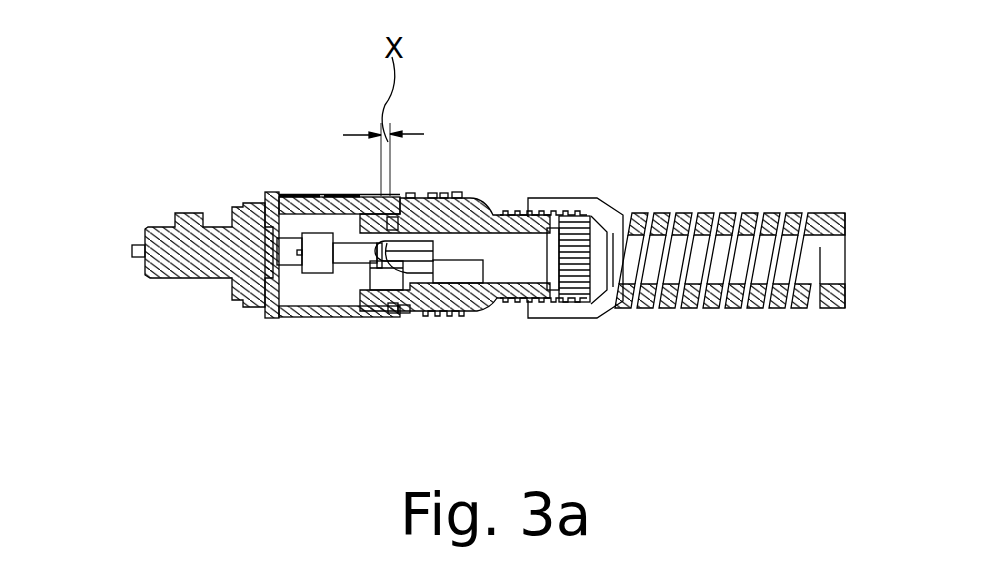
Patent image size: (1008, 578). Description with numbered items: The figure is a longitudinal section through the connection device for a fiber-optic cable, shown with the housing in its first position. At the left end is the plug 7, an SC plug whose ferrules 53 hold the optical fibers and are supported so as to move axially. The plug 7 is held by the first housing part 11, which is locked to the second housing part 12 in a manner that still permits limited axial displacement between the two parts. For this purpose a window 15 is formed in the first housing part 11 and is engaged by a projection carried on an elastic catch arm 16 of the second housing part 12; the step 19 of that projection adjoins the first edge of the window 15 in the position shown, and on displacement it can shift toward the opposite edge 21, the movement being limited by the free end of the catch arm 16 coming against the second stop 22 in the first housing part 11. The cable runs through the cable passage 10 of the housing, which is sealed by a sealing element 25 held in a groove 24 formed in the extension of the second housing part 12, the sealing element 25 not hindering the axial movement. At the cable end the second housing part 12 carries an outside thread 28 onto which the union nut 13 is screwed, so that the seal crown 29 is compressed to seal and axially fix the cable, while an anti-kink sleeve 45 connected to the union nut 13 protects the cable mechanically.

The plug 7 is at (196, 289).
The cable passage 10 is at (311, 292).
The first housing part 11 is at (279, 181).
The second housing part 12 is at (489, 330).
The union nut 13 is at (598, 198).
The window 15 is at (415, 196).
The catch arm 16 is at (457, 197).
The step 19 is at (433, 196).
The opposite edge 21 is at (405, 196).
The second stop 22 is at (355, 195).
The groove 24 is at (411, 314).
The sealing element 25 is at (392, 314).
The outside thread 28 is at (540, 197).
The seal crown 29 is at (597, 318).
The anti-kink sleeve 45 is at (756, 306).
The ferrules 53 is at (137, 228).